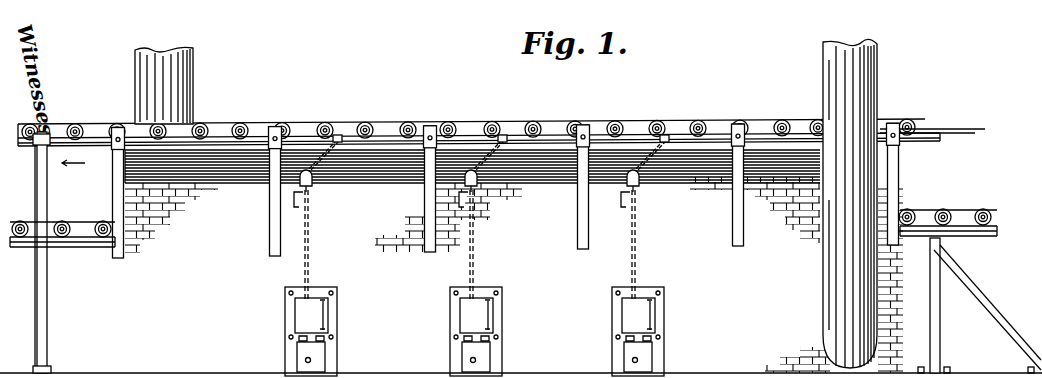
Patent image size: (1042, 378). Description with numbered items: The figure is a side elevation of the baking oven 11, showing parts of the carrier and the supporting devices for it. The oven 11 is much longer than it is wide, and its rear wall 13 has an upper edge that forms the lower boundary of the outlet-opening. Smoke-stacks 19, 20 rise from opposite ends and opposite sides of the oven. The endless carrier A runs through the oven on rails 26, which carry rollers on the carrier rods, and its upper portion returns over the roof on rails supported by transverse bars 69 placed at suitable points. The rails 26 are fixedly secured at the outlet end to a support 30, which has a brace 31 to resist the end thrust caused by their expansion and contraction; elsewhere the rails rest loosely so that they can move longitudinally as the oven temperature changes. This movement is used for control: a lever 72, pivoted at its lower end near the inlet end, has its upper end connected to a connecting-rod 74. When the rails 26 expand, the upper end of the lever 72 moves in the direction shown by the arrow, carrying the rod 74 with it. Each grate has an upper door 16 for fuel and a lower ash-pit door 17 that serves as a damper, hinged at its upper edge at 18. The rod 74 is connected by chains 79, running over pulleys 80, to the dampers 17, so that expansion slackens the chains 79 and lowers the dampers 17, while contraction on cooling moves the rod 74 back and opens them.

The oven 11 is at (246, 168).
The rear wall 13 is at (58, 372).
The upper door 16 is at (321, 318).
The lower door 17 is at (321, 357).
The hinge 18 is at (331, 338).
The smoke-stack 19 is at (185, 80).
The smoke-stack 20 is at (880, 72).
The rails 26 is at (87, 246).
The support 30 is at (940, 350).
The brace 31 is at (1000, 318).
The transverse bars 69 is at (115, 132).
The lever 72 is at (47, 176).
The connecting-rod 74 is at (598, 137).
The chains 79 is at (308, 251).
The pulleys 80 is at (312, 185).
The endless carrier A is at (386, 124).